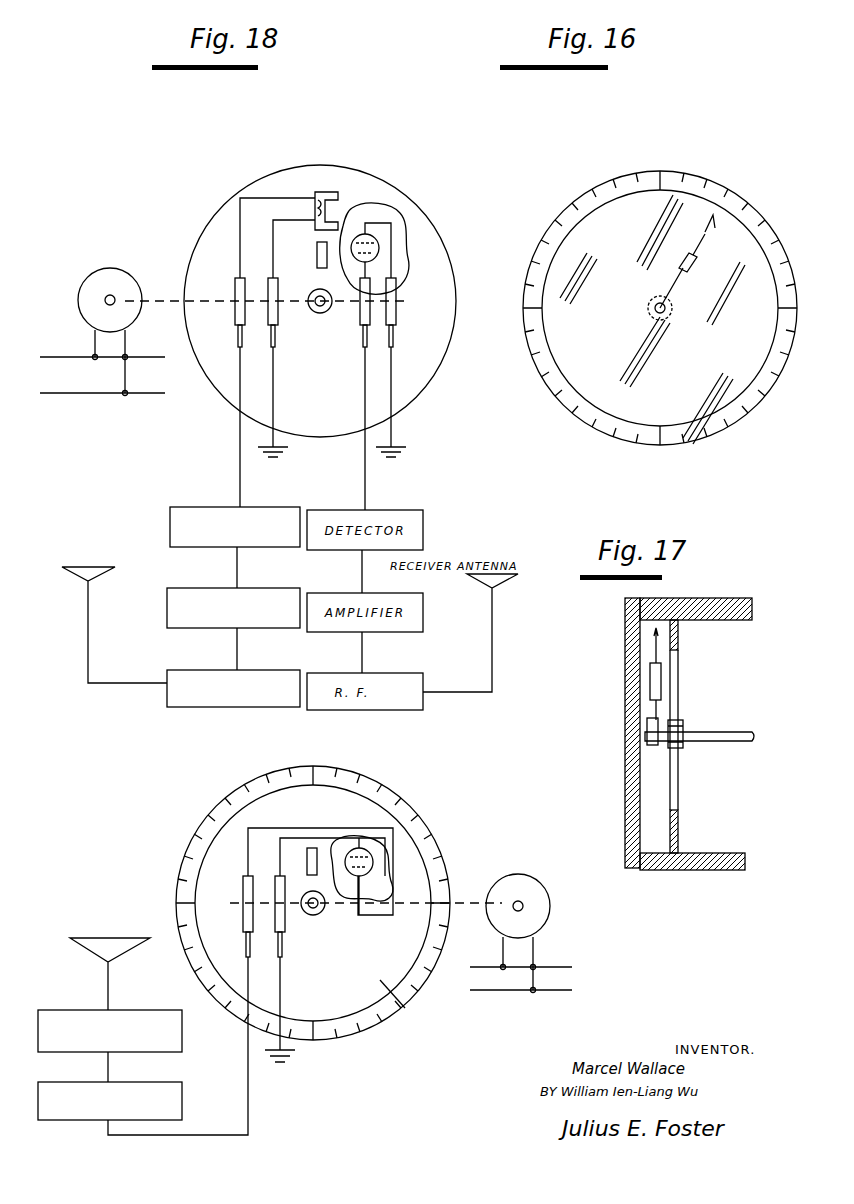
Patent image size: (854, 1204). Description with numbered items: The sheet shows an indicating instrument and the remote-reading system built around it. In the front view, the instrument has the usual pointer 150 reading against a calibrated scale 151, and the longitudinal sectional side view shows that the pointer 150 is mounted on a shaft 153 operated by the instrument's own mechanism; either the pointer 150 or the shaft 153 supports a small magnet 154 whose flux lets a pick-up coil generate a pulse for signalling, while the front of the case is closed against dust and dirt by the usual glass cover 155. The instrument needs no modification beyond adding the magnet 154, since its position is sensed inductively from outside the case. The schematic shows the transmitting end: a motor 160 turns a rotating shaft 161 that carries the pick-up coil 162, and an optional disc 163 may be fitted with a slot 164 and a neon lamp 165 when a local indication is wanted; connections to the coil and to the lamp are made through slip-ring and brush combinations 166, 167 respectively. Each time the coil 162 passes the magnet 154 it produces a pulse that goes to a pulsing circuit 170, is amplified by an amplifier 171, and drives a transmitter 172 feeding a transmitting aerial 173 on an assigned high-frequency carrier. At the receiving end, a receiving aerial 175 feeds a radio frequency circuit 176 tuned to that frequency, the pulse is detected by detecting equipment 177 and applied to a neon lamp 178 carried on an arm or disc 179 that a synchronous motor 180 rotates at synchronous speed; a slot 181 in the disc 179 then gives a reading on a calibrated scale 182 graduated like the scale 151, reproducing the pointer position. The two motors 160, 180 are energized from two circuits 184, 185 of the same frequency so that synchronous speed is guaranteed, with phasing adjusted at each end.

In FIG. 16, the pointer 150 is at (672, 292).
In FIG. 17, the pointer 150 is at (658, 712).
In FIG. 16, the calibrated scale 151 is at (732, 193).
In FIG. 17, the calibrated scale 151 is at (679, 637).
In FIG. 17, the shaft 153 is at (722, 741).
In FIG. 16, the magnet 154 is at (685, 256).
In FIG. 17, the magnet 154 is at (650, 690).
In FIG. 17, the glass cover 155 is at (626, 652).
In FIG. 18, the motor 160 is at (137, 282).
In FIG. 18, the motor shaft 161 is at (162, 302).
In FIG. 18, the pick-up coil 162 is at (326, 212).
In FIG. 18, the disc 163 is at (453, 262).
In FIG. 18, the slot 164 is at (316, 256).
In FIG. 18, the neon lamp 165 is at (372, 245).
In FIG. 18, the slip-ring and brush combination 166 is at (236, 326).
In FIG. 18, the slip-ring and brush combination 167 is at (397, 319).
In FIG. 18, the pulsing circuit 170 is at (170, 522).
In FIG. 18, the amplifier 171 is at (167, 600).
In FIG. 18, the transmitter 172 is at (167, 678).
In FIG. 18, the transmitting aerial 173 is at (72, 578).
In FIG. 18, the receiving aerial 175 is at (117, 954).
In FIG. 18, the radio frequency circuit 176 is at (170, 1044).
In FIG. 18, the detecting equipment 177 is at (172, 1092).
In FIG. 18, the neon lamp 178 is at (378, 852).
In FIG. 18, the disc 179 is at (395, 998).
In FIG. 18, the synchronous motor 180 is at (549, 902).
In FIG. 18, the slot 181 is at (316, 848).
In FIG. 18, the calibrated scale 182 is at (340, 783).
In FIG. 18, the circuit 184 is at (97, 385).
In FIG. 18, the circuit 185 is at (513, 986).